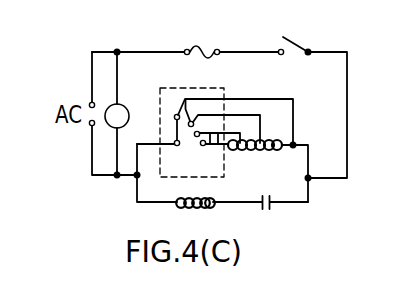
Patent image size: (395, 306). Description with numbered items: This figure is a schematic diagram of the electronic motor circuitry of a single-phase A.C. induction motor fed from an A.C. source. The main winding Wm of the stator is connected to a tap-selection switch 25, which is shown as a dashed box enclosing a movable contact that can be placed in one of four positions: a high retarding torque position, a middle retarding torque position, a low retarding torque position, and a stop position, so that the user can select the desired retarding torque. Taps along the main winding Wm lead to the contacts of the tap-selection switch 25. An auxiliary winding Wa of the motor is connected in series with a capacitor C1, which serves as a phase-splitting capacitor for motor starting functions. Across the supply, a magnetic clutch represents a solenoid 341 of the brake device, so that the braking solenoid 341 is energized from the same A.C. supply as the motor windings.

The tap-selection switch 25 is at (172, 92).
The solenoid 341 is at (121, 104).
The main winding Wm is at (257, 171).
The auxiliary winding Wa is at (219, 216).
The capacitor C1 is at (284, 214).